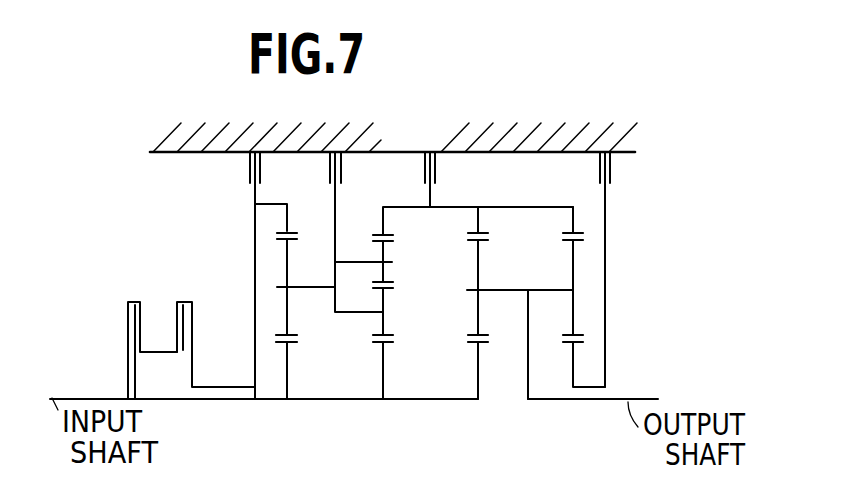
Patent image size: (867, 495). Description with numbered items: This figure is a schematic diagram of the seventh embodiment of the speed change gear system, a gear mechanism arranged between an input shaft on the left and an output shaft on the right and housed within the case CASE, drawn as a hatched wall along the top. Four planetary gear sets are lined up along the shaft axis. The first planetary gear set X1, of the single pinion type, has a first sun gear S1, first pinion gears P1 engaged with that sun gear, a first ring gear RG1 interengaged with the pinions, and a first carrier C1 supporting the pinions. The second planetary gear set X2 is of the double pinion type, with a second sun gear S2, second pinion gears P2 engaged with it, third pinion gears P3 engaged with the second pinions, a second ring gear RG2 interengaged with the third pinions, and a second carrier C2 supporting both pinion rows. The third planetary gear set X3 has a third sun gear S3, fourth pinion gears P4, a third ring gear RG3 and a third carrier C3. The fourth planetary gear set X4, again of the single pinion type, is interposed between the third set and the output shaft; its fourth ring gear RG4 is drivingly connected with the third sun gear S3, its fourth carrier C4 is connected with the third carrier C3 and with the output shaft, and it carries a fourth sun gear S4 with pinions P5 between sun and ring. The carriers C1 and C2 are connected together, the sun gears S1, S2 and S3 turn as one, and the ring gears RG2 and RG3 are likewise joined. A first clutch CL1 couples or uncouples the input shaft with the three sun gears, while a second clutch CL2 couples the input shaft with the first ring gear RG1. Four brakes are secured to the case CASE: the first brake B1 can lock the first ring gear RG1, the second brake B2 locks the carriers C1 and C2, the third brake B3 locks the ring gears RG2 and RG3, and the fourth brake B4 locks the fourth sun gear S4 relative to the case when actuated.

The case CASE is at (393, 137).
The first brake B1 is at (236, 170).
The second brake B2 is at (315, 170).
The third brake B3 is at (445, 170).
The fourth brake B4 is at (622, 174).
The first ring gear RG1 is at (287, 220).
The second ring gear RG2 is at (383, 223).
The third ring gear RG3 is at (478, 221).
The fourth ring gear RG4 is at (573, 222).
The first carrier C1 is at (312, 287).
The second carrier C2 is at (355, 311).
The third carrier C3 is at (505, 290).
The fourth carrier C4 is at (550, 283).
The first pinion gears P1 is at (287, 319).
The second pinion gears P2 is at (384, 323).
The third pinion gears P3 is at (385, 273).
The fourth pinion gears P4 is at (478, 308).
The fifth planet gear P5 is at (573, 317).
The first sun gear S1 is at (288, 367).
The second sun gear S2 is at (383, 362).
The third sun gear S3 is at (478, 358).
The fourth sun gear S4 is at (573, 358).
The first planetary gear set X1 is at (275, 356).
The second planetary gear set X2 is at (373, 356).
The third planetary gear set X3 is at (468, 361).
The fourth planetary gear set X4 is at (563, 361).
The first clutch CL1 is at (145, 332).
The second clutch CL2 is at (213, 326).